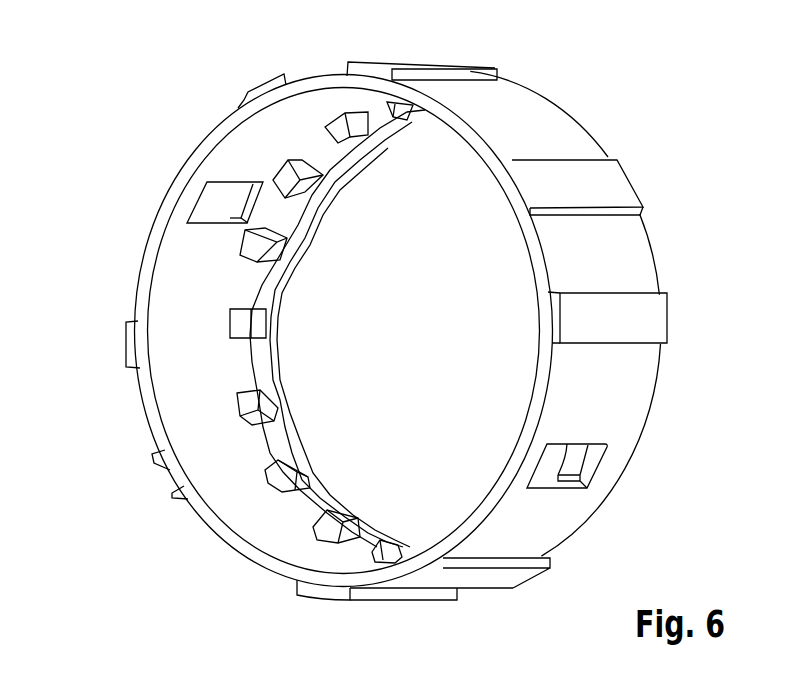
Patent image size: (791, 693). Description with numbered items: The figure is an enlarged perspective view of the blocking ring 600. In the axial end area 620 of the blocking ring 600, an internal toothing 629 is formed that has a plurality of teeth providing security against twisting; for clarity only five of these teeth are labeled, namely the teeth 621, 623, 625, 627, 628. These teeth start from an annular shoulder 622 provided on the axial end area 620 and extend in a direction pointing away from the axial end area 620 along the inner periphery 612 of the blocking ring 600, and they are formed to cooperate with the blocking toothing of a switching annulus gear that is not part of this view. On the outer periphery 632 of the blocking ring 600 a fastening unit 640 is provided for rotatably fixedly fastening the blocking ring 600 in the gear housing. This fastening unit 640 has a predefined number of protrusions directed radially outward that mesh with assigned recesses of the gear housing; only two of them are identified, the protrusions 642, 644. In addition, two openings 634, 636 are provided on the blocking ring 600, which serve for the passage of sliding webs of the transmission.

The blocking ring 600 is at (606, 113).
The inner periphery 612 is at (200, 394).
The axial end area 620 is at (278, 357).
The tooth 621 is at (395, 538).
The annular shoulder 622 is at (290, 212).
The tooth 623 is at (330, 527).
The tooth 625 is at (282, 470).
The tooth 627 is at (250, 403).
The tooth 628 is at (237, 327).
The internal toothing 629 is at (320, 165).
The outer periphery 632 is at (598, 253).
The opening 634 is at (583, 475).
The opening 636 is at (220, 201).
The fastening unit 640 is at (175, 503).
The protrusion 642 is at (158, 465).
The protrusion 644 is at (127, 346).